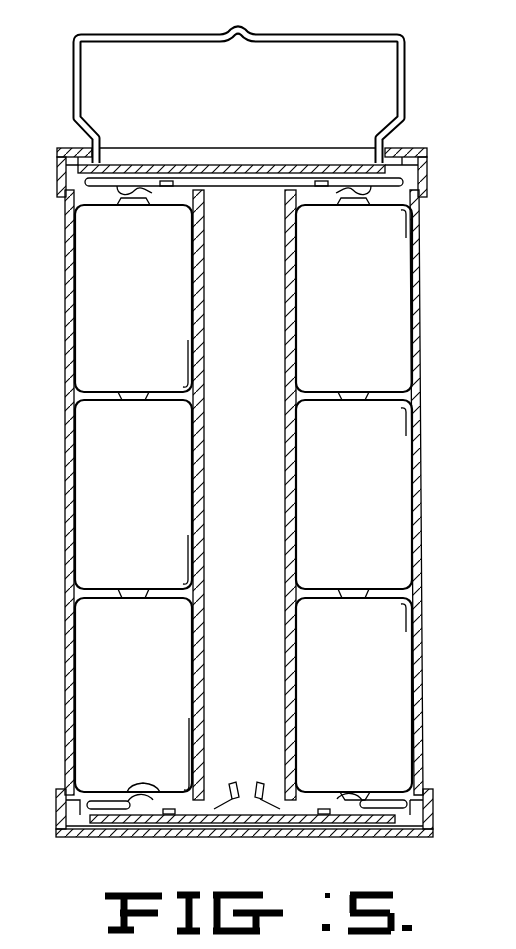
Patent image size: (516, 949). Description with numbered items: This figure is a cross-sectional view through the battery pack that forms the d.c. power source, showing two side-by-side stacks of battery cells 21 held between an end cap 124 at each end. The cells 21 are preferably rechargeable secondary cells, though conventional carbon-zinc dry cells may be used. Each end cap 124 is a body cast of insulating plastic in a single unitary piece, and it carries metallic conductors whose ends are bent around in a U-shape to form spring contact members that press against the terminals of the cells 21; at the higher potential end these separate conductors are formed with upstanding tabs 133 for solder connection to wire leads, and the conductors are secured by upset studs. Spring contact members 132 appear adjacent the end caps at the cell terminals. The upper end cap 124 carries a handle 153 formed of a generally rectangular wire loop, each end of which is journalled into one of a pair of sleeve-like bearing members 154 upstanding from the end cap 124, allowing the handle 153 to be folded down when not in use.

The battery cells 21 is at (307, 320).
The end cap 124 is at (58, 153).
The contact spring 132 is at (130, 801).
The upstanding tabs 133 is at (222, 806).
The handle 153 is at (138, 43).
The sleeve-like bearing members 154 is at (75, 147).